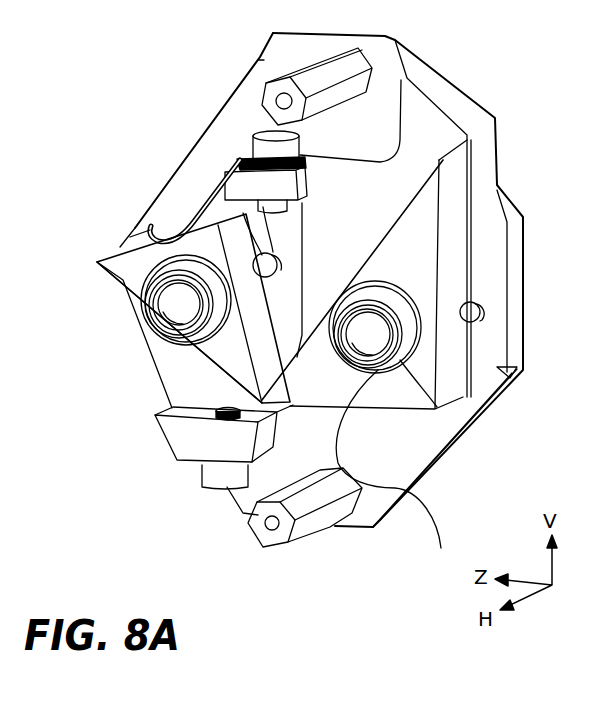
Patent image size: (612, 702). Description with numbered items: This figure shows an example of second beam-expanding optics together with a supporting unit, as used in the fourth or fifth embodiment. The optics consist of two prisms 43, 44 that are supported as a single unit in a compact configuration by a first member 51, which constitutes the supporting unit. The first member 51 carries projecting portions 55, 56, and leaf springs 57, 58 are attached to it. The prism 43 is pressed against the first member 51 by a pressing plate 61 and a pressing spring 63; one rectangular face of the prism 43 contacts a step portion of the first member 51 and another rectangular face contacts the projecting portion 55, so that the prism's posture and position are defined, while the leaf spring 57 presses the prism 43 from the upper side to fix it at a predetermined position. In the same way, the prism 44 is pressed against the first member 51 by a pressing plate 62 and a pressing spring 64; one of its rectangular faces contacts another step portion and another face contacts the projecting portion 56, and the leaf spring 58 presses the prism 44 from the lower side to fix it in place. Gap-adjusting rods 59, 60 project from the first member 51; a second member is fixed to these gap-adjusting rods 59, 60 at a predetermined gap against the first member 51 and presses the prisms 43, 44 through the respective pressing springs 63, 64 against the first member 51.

The first member 51 is at (433, 82).
The prism 44 is at (480, 178).
The gap-adjusting rod 59 is at (270, 80).
The projecting portion 55 is at (240, 192).
The leaf spring 57 is at (190, 222).
The prism 43 is at (132, 232).
The pressing plate 61 is at (148, 275).
The pressing spring 63 is at (135, 318).
The gap-adjusting rod 60 is at (256, 537).
The projecting portion 56 is at (480, 322).
The pressing spring 64 is at (372, 376).
The leaf spring 58 is at (396, 472).
The pressing plate 62 is at (440, 393).